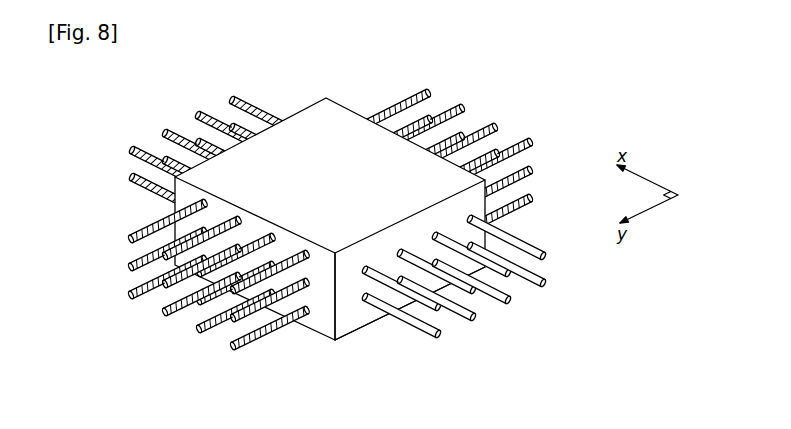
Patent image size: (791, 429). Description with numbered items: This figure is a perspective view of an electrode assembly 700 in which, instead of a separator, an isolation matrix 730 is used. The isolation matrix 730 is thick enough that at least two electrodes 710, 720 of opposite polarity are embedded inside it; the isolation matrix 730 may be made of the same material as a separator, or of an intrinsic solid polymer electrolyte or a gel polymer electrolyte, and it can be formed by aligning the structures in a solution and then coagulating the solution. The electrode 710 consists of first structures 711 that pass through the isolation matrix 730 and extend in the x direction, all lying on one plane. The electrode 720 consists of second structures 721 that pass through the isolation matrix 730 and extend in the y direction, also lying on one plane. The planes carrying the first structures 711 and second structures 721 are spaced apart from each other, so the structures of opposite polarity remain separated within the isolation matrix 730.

The electrode assembly 700 is at (481, 114).
The electrode 710 is at (479, 315).
The first structure 711 is at (545, 284).
The electrode 720 is at (184, 310).
The second structure 721 is at (180, 411).
The isolation matrix 730 is at (352, 321).